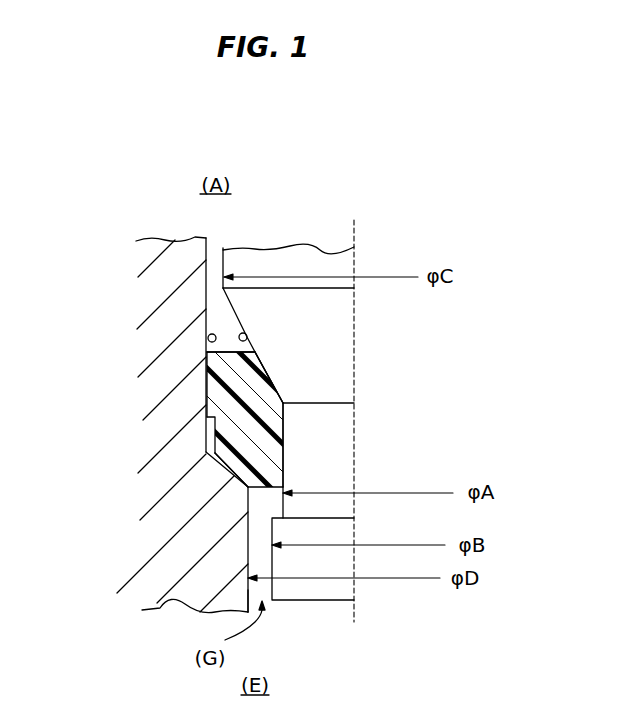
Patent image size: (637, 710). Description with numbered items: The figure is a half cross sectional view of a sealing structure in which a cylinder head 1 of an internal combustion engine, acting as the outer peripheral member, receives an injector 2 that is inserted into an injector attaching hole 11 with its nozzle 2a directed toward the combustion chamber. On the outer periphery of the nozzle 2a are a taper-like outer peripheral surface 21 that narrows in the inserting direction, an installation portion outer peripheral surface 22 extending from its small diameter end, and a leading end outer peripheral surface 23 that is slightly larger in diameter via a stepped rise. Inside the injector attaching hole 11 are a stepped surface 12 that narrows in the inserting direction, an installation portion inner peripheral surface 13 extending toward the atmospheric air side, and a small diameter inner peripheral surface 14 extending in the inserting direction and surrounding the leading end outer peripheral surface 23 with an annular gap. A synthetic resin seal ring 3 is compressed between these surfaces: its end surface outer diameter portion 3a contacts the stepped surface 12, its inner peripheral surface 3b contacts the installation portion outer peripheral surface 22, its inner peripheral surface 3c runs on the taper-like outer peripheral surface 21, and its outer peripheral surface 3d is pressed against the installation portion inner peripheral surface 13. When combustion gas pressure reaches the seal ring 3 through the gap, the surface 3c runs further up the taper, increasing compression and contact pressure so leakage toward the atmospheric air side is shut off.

The cylinder head 1 is at (152, 549).
The injector 2 is at (289, 240).
The nozzle 2a is at (345, 607).
The seal ring 3 is at (232, 413).
The end surface outer diameter portion 3a is at (220, 462).
The inner peripheral surface in the inserting direction side 3b is at (286, 469).
The inner peripheral surface in the opposite direction side to the inserting directi 3c is at (273, 368).
The outer peripheral surface in the opposite side to the inserting direction 3d is at (208, 354).
The injector attaching hole 11 is at (221, 324).
The stepped surface 12 is at (216, 449).
The installation portion inner peripheral surface 13 is at (207, 337).
The small diameter inner peripheral surface 14 is at (248, 562).
The taper-like outer peripheral surface 21 is at (245, 332).
The installation portion outer peripheral surface 22 is at (284, 431).
The leading end outer peripheral surface 23 is at (243, 567).